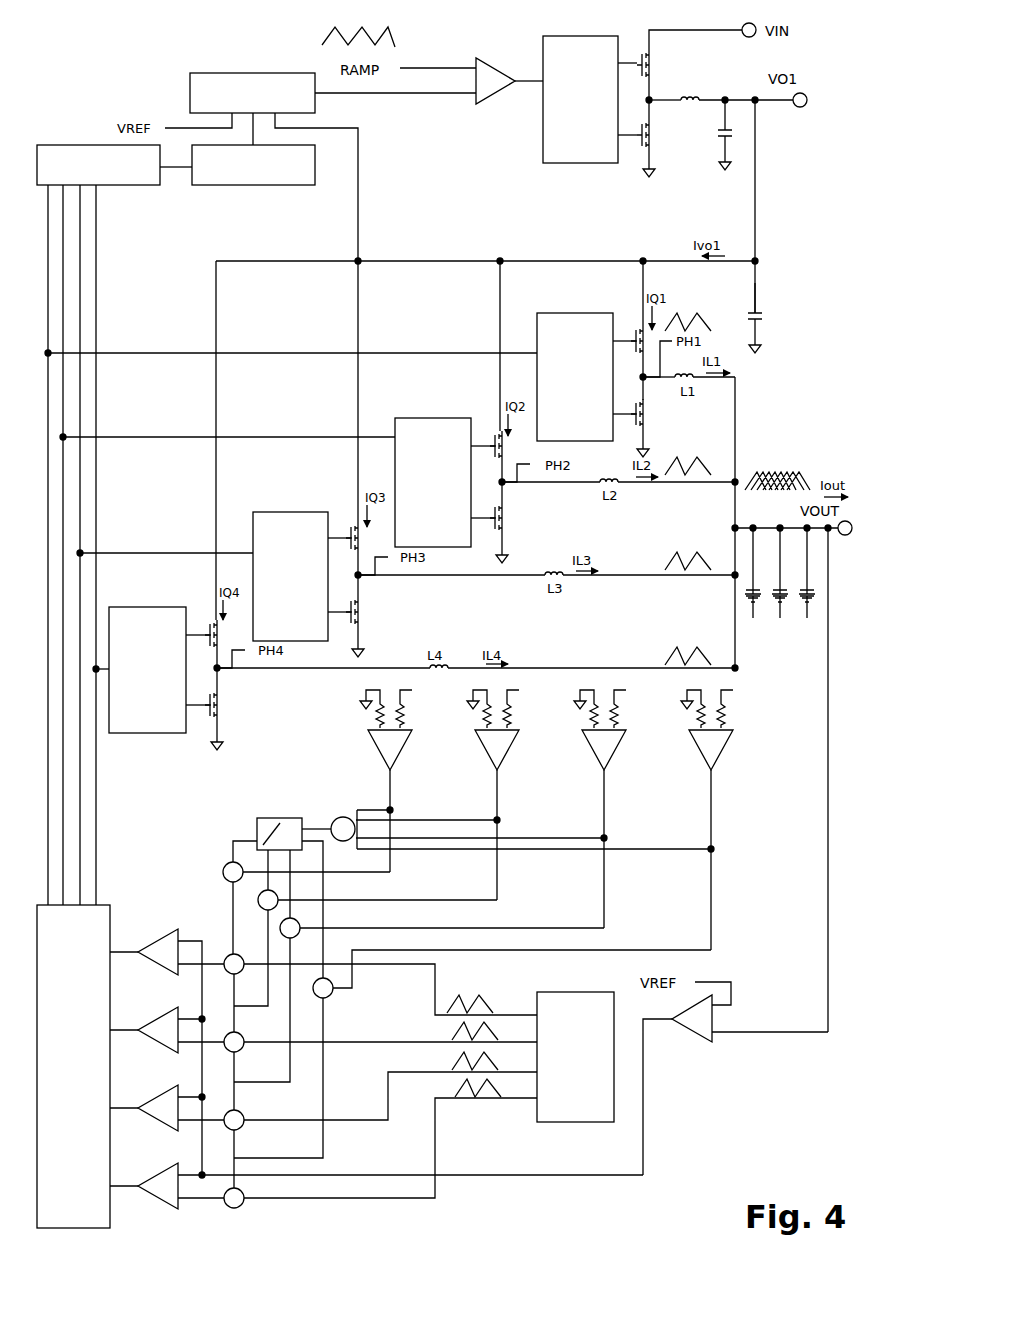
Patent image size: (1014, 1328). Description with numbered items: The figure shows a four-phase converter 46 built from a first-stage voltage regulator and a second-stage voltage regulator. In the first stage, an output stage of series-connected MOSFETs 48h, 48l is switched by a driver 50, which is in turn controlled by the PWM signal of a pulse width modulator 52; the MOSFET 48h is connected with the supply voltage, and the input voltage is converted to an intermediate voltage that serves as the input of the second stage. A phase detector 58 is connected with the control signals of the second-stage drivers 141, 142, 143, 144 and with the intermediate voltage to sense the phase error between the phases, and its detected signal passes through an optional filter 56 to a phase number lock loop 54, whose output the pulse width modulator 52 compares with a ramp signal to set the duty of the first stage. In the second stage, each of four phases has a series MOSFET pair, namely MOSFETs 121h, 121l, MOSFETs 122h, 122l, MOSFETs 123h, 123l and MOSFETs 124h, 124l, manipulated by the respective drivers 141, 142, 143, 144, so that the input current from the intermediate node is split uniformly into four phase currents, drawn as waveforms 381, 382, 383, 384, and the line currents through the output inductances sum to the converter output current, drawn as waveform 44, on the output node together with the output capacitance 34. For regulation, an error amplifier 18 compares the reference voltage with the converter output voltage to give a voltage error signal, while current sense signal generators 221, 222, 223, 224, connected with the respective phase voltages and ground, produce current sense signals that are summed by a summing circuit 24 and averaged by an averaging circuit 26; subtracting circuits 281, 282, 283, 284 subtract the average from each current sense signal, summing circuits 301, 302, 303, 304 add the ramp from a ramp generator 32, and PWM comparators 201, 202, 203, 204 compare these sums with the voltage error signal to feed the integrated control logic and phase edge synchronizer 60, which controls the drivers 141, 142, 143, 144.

The four-phase converter 46 is at (118, 100).
The phase number lock loop 54 is at (320, 108).
The pulse width modulator 52 is at (492, 104).
The driver 50 is at (543, 143).
The MOSFET 48h is at (660, 63).
The MOSFET 48l is at (661, 140).
The phase detector 58 is at (152, 186).
The filter 56 is at (262, 186).
The driver 141 is at (562, 313).
The driver 142 is at (420, 418).
The driver 143 is at (285, 512).
The driver 144 is at (135, 607).
The MOSFET 121h is at (628, 327).
The MOSFET 122h is at (487, 432).
The MOSFET 123h is at (343, 525).
The MOSFET 124h is at (203, 622).
The MOSFET 121l is at (662, 412).
The MOSFET 122l is at (516, 519).
The MOSFET 123l is at (372, 608).
The MOSFET 124l is at (229, 699).
The waveform 381 is at (687, 318).
The waveform 382 is at (686, 469).
The waveform 383 is at (686, 546).
The waveform 384 is at (686, 641).
The waveform 44 is at (797, 470).
The output capacitance 34 is at (806, 583).
The current sense signal generator 221 is at (402, 755).
The current sense signal generator 222 is at (509, 755).
The current sense signal generator 223 is at (616, 755).
The current sense signal generator 224 is at (723, 755).
The summing circuit 24 is at (332, 819).
The averaging circuit 26 is at (258, 819).
The subtracting circuit 281 is at (222, 870).
The subtracting circuit 282 is at (258, 904).
The subtracting circuit 283 is at (300, 923).
The subtracting circuit 284 is at (331, 997).
The control logic and phase edge synchronizer 60 is at (112, 905).
The PWM comparator 201 is at (162, 930).
The PWM comparator 202 is at (160, 1010).
The PWM comparator 203 is at (160, 1088).
The PWM comparator 204 is at (160, 1166).
The summing circuit 301 is at (226, 973).
The summing circuit 302 is at (226, 1051).
The summing circuit 303 is at (226, 1129).
The summing circuit 304 is at (226, 1207).
The error amplifier 18 is at (700, 1042).
The ramp generator 32 is at (565, 1122).